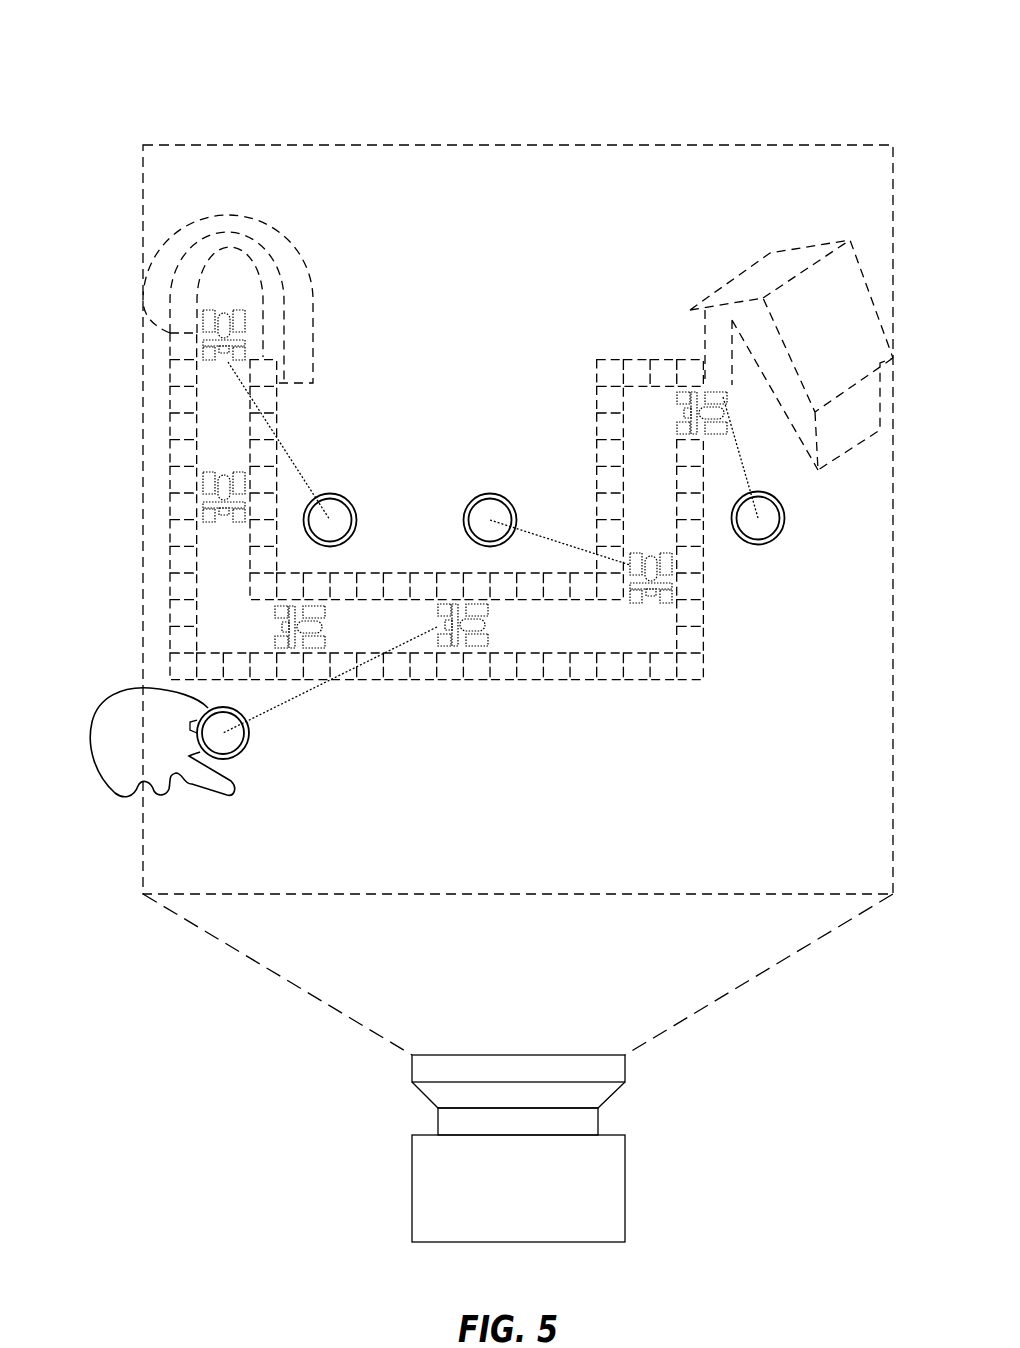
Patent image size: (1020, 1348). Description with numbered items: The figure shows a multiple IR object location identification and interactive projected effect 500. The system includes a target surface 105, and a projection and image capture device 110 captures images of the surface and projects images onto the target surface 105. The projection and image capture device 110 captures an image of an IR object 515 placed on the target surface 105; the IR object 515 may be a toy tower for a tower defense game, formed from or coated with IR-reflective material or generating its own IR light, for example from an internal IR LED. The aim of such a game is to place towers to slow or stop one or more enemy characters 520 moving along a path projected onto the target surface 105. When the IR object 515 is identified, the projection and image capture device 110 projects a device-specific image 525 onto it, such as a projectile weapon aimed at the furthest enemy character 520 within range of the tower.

The multiple IR object location identification and interactive projected effect 500 is at (823, 38).
The target surface 105 is at (170, 163).
The projection and image capture device 110 is at (423, 1215).
The IR object 515 is at (237, 763).
The enemy character 520 is at (223, 473).
The device-specific image 525 is at (263, 713).